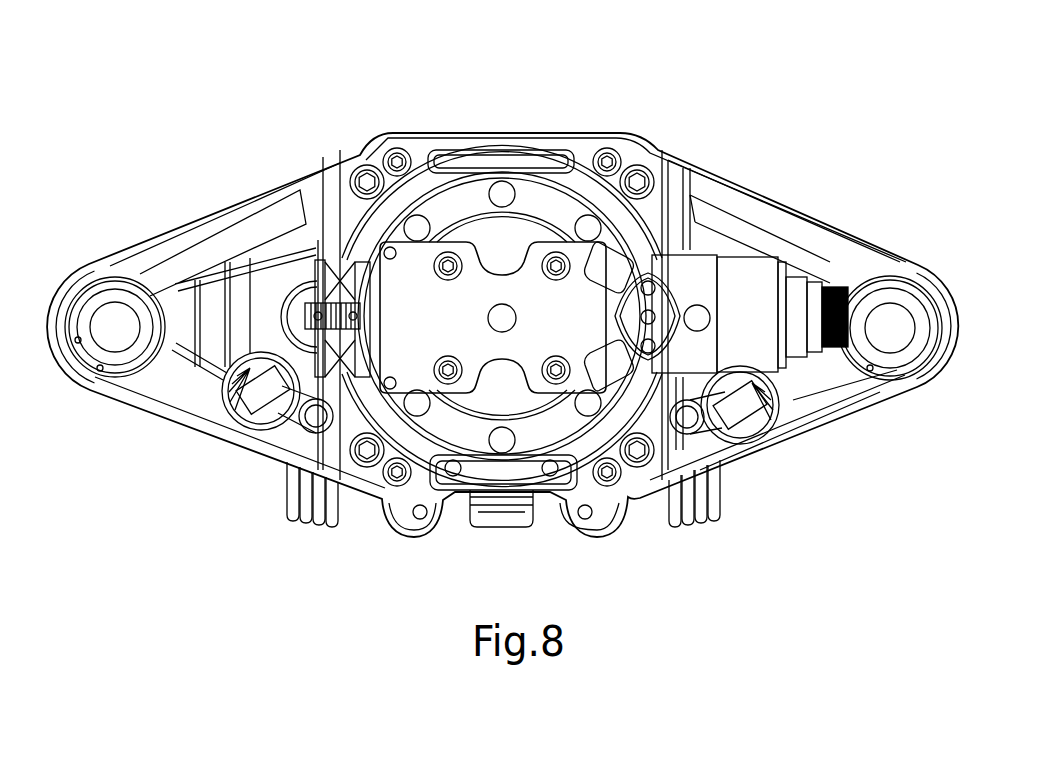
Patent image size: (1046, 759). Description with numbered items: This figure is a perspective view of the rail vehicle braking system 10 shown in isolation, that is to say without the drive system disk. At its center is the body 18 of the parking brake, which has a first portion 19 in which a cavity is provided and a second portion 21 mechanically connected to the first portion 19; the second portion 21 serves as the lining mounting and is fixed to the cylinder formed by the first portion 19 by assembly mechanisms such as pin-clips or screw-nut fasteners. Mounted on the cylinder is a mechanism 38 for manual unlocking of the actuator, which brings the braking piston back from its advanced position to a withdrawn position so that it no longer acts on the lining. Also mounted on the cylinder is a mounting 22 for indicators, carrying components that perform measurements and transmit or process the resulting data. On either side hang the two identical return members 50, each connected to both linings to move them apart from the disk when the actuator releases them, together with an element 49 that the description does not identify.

The rail vehicle braking system 10 is at (212, 86).
The body 18 is at (152, 190).
The first portion 19 is at (645, 152).
The second portion 21 is at (826, 228).
The mounting for indicators 22 is at (733, 332).
The mechanism for manual unlocking 38 is at (414, 330).
The spring element 49 is at (245, 447).
The return members 50 is at (313, 520).